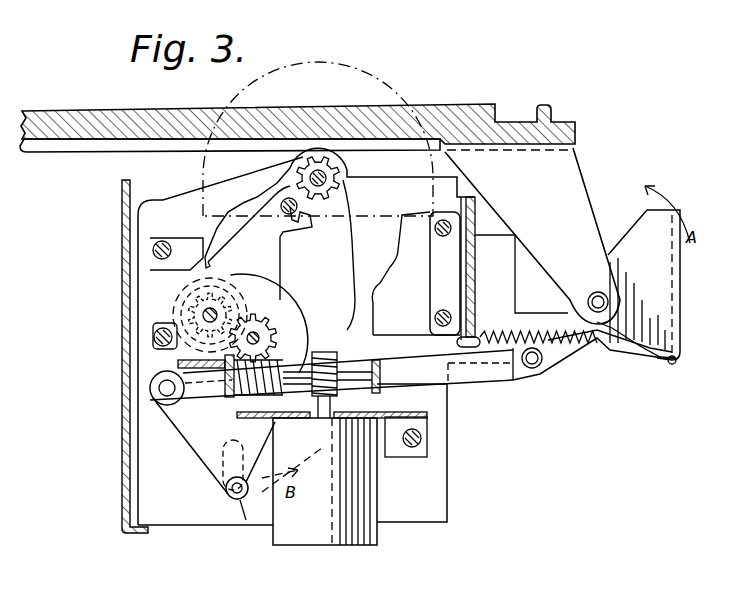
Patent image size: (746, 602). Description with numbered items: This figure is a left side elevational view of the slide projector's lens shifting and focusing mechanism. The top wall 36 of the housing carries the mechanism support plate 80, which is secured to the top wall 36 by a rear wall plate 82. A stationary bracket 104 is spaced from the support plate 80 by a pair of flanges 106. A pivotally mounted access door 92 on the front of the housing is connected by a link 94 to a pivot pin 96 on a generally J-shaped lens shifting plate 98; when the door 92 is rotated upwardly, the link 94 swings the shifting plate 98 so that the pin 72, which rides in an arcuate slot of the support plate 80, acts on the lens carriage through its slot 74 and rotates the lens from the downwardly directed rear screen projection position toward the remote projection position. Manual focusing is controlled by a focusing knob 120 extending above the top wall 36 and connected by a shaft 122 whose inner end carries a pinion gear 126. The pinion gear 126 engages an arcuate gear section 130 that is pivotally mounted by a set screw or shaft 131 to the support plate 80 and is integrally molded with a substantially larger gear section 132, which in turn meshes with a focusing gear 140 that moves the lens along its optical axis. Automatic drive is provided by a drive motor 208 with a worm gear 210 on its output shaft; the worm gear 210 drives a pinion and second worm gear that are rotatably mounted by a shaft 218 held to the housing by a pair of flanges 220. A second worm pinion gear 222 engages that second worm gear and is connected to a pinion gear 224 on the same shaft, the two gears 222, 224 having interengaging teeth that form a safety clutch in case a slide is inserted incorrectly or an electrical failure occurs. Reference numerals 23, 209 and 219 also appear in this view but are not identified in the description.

The coil spring and rack 23 is at (177, 359).
The top wall 36 is at (457, 104).
The pin 72 is at (245, 505).
The slot 74 is at (214, 497).
The mechanism support plate 80 is at (180, 495).
The rear wall plate 82 is at (122, 195).
The access door 92 is at (650, 222).
The link 94 is at (514, 375).
The pivot pin 96 is at (148, 389).
The lens shifting plate 98 is at (200, 462).
The stationary bracket 104 is at (170, 268).
The flanges 106 is at (150, 243).
The focusing knob 120 is at (383, 75).
The shaft 122 is at (335, 170).
The pinion gear 126 is at (317, 170).
The arcuate gear section 130 is at (288, 197).
The set screw 131 is at (270, 197).
The larger gear section 132 is at (272, 259).
The focusing gear 140 is at (172, 302).
The drive motor 208 is at (315, 532).
The bracket 209 is at (440, 421).
The worm gear 210 is at (320, 352).
The shaft 218 is at (372, 375).
The slot 219 is at (230, 443).
The flanges 220 is at (222, 398).
The second worm pinion gear 222 is at (304, 312).
The pinion gear 224 is at (270, 325).